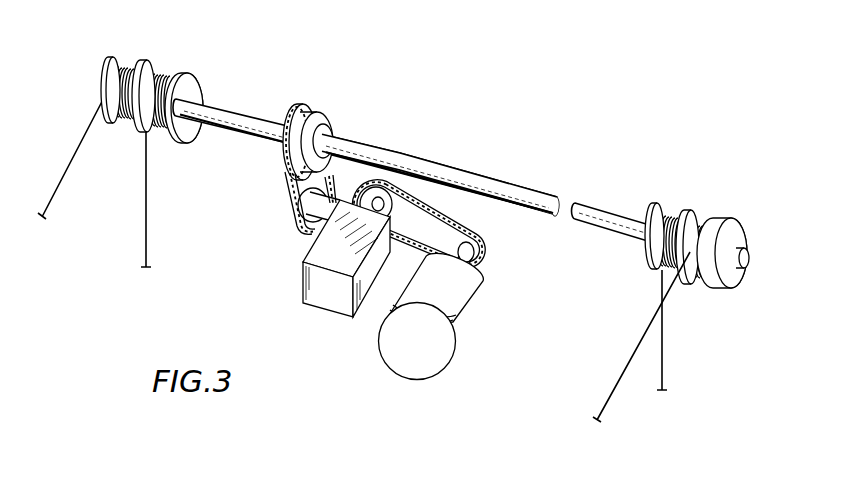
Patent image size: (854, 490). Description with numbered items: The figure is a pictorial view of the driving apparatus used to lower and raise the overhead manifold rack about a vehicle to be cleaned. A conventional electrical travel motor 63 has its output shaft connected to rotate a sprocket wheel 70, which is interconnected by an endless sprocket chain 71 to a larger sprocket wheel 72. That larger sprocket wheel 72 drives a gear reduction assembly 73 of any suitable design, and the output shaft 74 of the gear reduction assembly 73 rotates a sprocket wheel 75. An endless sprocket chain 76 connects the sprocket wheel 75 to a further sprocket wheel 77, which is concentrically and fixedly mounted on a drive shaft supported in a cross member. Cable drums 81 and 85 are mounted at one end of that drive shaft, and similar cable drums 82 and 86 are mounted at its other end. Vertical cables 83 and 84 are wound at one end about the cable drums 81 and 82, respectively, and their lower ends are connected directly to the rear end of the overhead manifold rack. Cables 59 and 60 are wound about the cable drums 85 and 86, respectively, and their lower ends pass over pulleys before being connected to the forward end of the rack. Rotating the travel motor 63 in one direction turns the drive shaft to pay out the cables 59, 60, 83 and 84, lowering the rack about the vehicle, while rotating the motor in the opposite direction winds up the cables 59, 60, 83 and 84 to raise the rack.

The cable 59 is at (70, 166).
The cable 60 is at (650, 320).
The electrical motor 63 is at (470, 318).
The sprocket wheel 70 is at (481, 232).
The endless sprocket chain 71 is at (433, 216).
The larger sprocket wheel 72 is at (377, 192).
The gear reduction assembly 73 is at (325, 302).
The output shaft 74 is at (304, 238).
The sprocket wheel 75 is at (298, 205).
The endless sprocket chain 76 is at (287, 182).
The sprocket wheel 77 is at (321, 111).
The cable drum 81 is at (196, 80).
The cable drum 82 is at (656, 210).
The vertical cable 83 is at (149, 219).
The vertical cable 84 is at (664, 332).
The cable drum 85 is at (147, 62).
The cable drum 86 is at (743, 230).